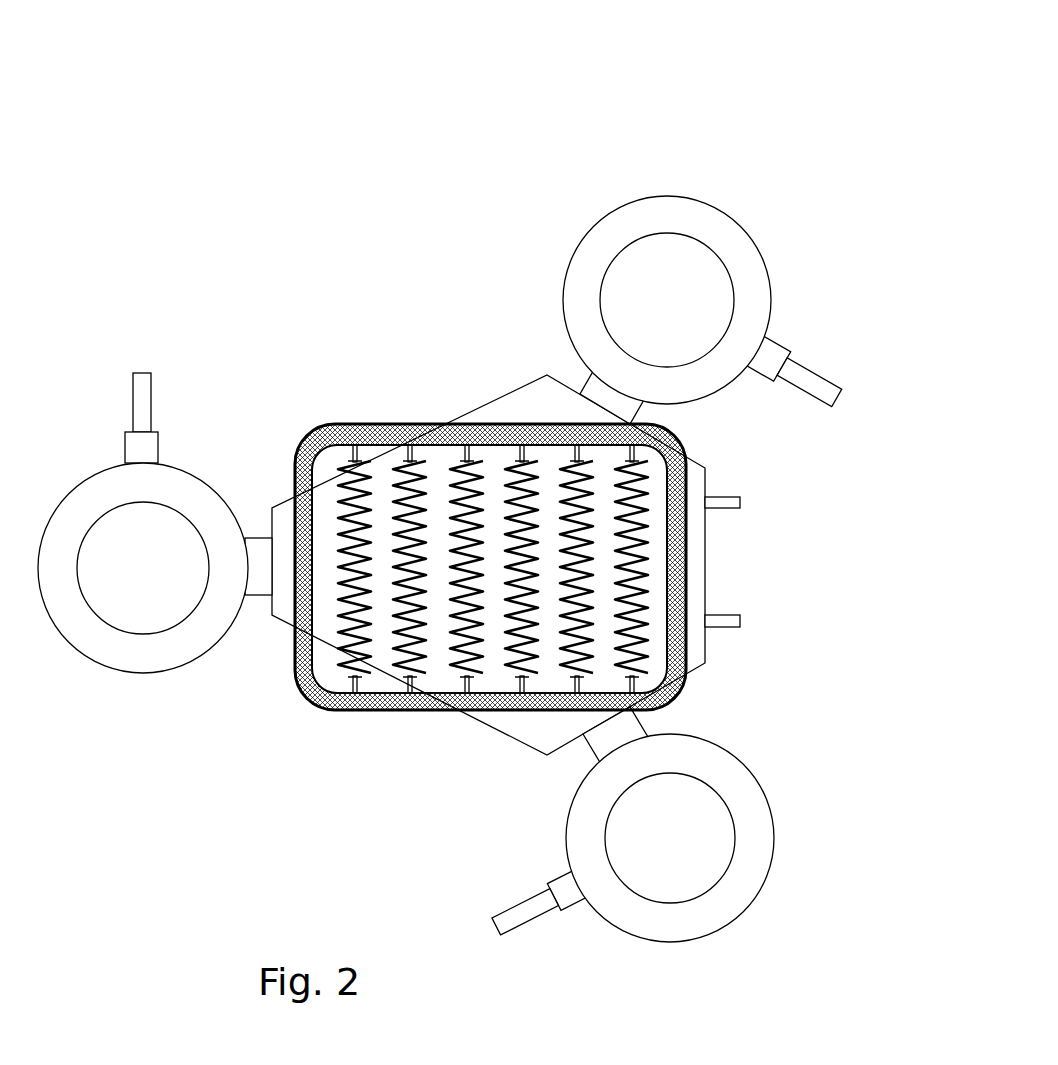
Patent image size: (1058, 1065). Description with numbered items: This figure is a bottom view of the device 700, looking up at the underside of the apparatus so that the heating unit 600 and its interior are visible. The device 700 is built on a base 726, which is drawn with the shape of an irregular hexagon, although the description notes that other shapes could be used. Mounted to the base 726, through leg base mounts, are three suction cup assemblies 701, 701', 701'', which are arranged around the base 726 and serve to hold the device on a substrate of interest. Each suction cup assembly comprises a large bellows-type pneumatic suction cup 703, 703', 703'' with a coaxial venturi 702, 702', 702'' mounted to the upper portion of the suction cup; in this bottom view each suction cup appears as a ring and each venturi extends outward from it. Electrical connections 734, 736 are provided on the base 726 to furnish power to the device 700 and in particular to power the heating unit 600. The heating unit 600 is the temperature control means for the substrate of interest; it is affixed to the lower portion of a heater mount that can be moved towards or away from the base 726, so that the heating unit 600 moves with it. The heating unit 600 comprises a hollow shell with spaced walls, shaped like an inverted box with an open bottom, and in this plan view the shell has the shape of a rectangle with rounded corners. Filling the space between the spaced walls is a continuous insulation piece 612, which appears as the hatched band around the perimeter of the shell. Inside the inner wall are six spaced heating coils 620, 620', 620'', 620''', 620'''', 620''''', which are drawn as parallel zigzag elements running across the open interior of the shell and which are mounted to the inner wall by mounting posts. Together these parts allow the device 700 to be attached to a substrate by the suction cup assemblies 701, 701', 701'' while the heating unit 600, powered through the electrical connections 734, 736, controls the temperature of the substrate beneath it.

The device 700 is at (266, 172).
The heating unit 600 is at (422, 628).
The continuous insulation piece 612 is at (370, 708).
The heating coil 620 is at (334, 495).
The heating coil 620' is at (387, 503).
The heating coil 620'' is at (443, 515).
The heating coil 620''' is at (450, 624).
The heating coil 620'''' is at (518, 611).
The heating coil 620''''' is at (555, 654).
The base 726 is at (527, 373).
The electrical connection 734 is at (745, 503).
The electrical connection 736 is at (745, 620).
The suction cup assembly 701 is at (709, 846).
The suction cup assembly 701' is at (152, 465).
The suction cup assembly 701'' is at (711, 217).
The coaxial venturi 702 is at (553, 940).
The coaxial venturi 702' is at (195, 368).
The coaxial venturi 702'' is at (840, 346).
The bellows-type pneumatic suction cup 703 is at (697, 811).
The bellows-type pneumatic suction cup 703' is at (163, 516).
The bellows-type pneumatic suction cup 703'' is at (627, 273).